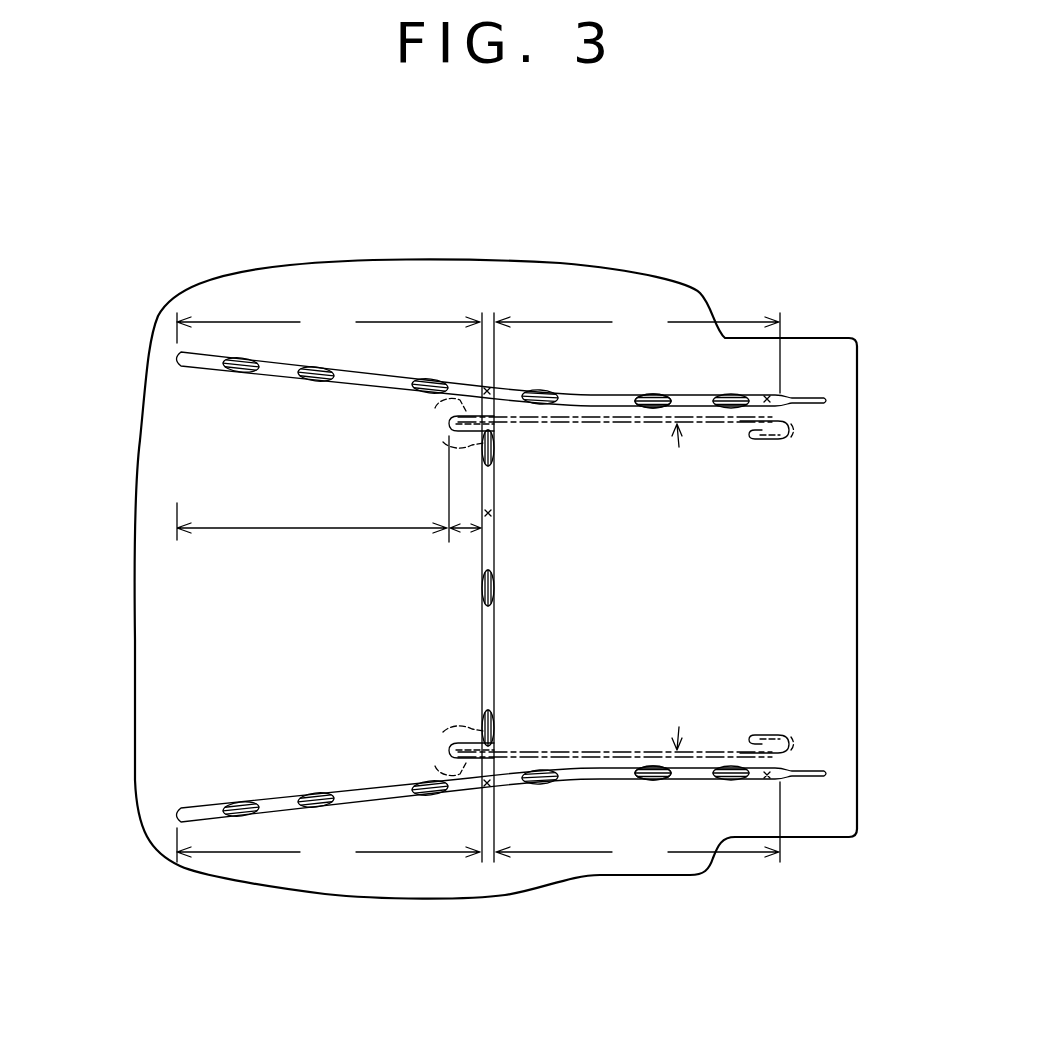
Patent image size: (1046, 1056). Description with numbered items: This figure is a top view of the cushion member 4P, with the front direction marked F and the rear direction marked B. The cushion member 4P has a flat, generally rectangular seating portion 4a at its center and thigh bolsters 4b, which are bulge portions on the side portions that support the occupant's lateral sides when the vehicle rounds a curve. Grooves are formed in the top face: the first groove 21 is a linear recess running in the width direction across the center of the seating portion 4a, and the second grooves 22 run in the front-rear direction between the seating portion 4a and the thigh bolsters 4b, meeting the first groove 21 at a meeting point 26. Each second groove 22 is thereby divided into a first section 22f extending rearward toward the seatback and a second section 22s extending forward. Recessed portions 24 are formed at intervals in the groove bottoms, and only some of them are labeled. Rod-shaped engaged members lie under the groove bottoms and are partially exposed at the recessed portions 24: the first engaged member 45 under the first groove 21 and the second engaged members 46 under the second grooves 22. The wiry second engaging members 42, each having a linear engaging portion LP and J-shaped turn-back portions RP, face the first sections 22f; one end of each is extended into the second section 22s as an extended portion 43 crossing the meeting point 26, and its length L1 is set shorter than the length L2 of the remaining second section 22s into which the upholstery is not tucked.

The cushion member 4P is at (768, 296).
The seating portion 4a is at (253, 634).
The thigh bolsters 4b is at (431, 308).
The first groove 21 is at (492, 518).
The second grooves 22 is at (765, 396).
The second section 22s is at (328, 587).
The first section 22f is at (638, 587).
The recessed portions 24 is at (660, 392).
The meeting point 26 is at (488, 391).
The second engaging members 42 is at (680, 450).
The extended portion 43 is at (440, 406).
The first engaged member 45 is at (495, 441).
The second engaged members 46 is at (648, 393).
The turn-back portions RP is at (437, 447).
The engaging portion LP is at (611, 426).
The length of the extended portion L1 is at (465, 534).
The length of the remaining portion of the second section L2 is at (313, 489).
The front direction F is at (83, 601).
The back direction B is at (934, 601).